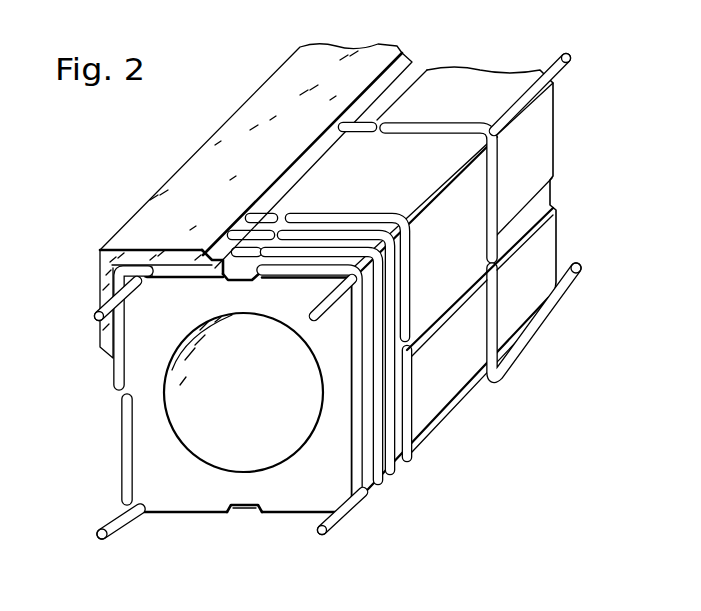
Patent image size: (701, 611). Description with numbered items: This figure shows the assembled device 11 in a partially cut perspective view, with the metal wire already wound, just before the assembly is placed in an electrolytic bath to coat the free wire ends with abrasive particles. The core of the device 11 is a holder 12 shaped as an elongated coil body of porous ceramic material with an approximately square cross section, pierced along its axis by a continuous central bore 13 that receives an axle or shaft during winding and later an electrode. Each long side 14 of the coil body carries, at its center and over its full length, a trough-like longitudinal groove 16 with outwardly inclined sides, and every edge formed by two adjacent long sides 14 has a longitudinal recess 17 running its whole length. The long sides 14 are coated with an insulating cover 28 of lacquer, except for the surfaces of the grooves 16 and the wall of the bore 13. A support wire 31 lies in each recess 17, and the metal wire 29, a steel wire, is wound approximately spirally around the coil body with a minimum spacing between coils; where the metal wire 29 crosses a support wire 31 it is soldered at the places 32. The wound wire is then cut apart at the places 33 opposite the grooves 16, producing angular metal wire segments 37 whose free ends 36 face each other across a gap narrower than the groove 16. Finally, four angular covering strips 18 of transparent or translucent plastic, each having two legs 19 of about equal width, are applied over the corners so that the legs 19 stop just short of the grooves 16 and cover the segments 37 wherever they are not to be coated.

The device 11 is at (258, 64).
The holder 12 is at (278, 514).
The central bore 13 is at (192, 426).
The long side 14 is at (204, 513).
The longitudinal groove 16 is at (203, 247).
The longitudinal recess 17 is at (532, 80).
The covering strip 18 is at (176, 168).
The leg 19 is at (138, 257).
The insulating cover 28 is at (313, 270).
The metal wire 29 is at (412, 458).
The support wire 31 is at (571, 53).
The crossing place 32 is at (380, 475).
The cutting place 33 is at (293, 207).
The free end 36 is at (376, 124).
The metal wire segment 37 is at (453, 127).